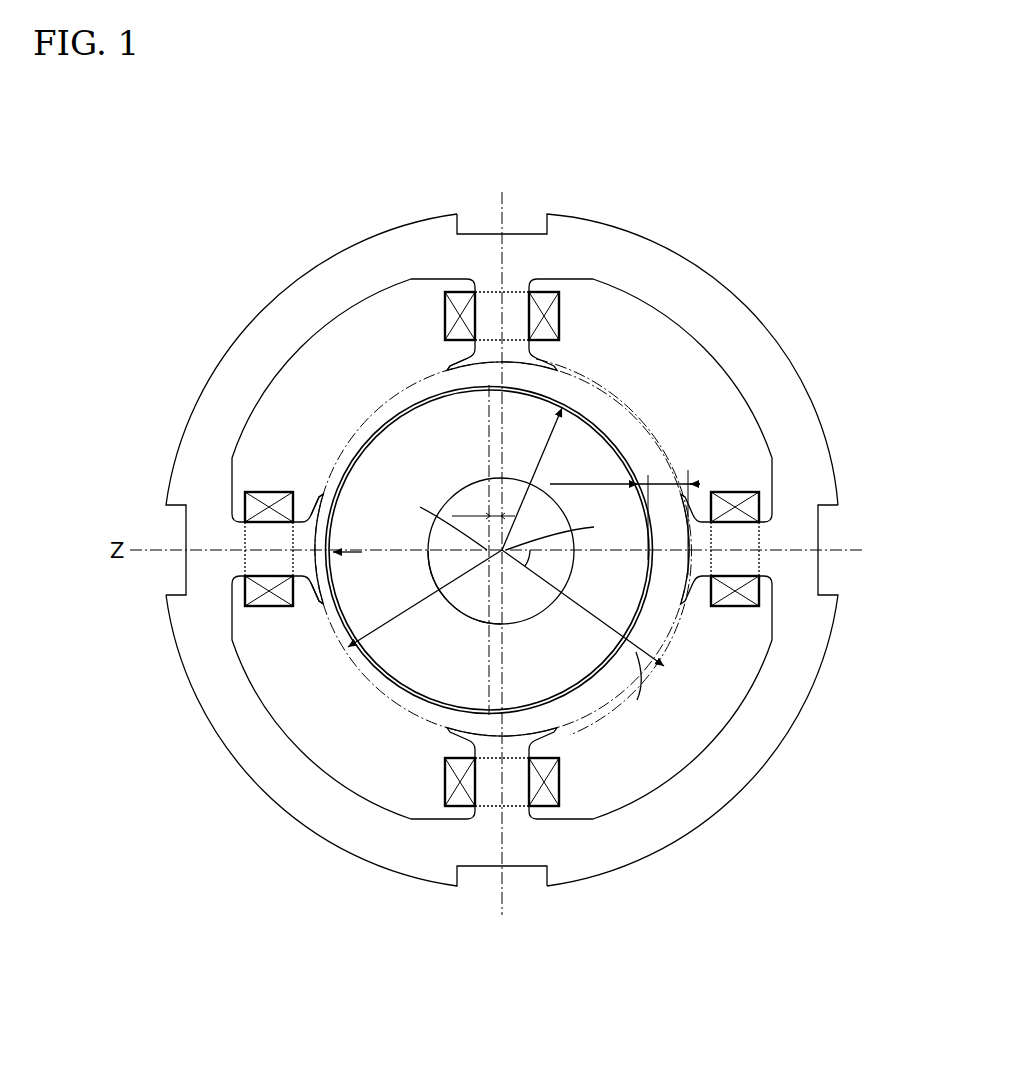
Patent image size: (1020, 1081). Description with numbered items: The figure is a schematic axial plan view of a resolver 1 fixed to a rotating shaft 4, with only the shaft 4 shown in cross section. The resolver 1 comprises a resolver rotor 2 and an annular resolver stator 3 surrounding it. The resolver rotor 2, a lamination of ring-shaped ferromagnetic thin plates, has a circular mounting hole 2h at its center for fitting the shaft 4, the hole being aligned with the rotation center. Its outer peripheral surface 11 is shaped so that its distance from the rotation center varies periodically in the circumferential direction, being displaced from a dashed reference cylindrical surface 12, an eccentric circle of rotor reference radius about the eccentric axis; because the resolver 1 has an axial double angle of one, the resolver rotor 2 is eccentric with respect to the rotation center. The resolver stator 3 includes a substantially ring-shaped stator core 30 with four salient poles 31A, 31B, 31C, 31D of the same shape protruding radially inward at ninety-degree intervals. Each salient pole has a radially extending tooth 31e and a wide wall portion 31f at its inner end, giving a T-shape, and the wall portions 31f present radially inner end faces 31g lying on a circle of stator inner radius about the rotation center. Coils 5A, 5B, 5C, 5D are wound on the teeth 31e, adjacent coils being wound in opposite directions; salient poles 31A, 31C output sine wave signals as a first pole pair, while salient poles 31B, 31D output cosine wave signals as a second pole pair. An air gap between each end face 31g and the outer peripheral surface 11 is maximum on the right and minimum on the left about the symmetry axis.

The resolver 1 is at (198, 262).
The resolver rotor 2 is at (566, 398).
The circular mounting hole 2h is at (455, 606).
The resolver stator 3 is at (187, 391).
The shaft 4 is at (476, 485).
The coil 5A is at (246, 592).
The coil 5B is at (561, 774).
The coil 5C is at (755, 508).
The coil 5D is at (448, 325).
The outer peripheral surface 11 is at (620, 404).
The reference cylindrical surface 12 is at (644, 432).
The stator core 30 is at (178, 468).
The salient pole 31A is at (252, 614).
The salient pole 31B is at (570, 804).
The salient pole 31C is at (746, 618).
The salient pole 31D is at (560, 348).
The tooth 31e is at (268, 540).
The wall portion 31f is at (310, 607).
The radially inner end face 31g is at (451, 373).